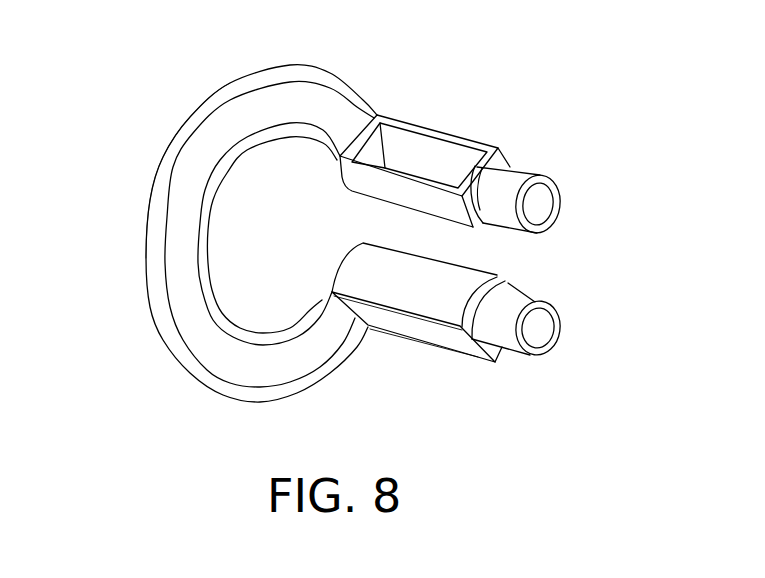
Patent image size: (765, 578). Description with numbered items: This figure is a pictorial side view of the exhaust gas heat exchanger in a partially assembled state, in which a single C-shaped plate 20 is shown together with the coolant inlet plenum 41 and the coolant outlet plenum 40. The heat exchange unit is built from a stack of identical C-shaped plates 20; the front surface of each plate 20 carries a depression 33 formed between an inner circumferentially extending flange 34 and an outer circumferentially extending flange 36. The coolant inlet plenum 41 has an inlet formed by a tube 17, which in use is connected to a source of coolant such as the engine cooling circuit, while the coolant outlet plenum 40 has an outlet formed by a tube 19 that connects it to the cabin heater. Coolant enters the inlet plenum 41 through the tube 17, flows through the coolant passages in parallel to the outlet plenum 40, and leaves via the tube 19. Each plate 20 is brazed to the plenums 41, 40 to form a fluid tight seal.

The C-shaped plate 20 is at (146, 256).
The outer circumferentially extending flange 36 is at (187, 148).
The depression 33 is at (183, 225).
The inner circumferentially extending flange 34 is at (227, 190).
The coolant inlet plenum 41 is at (455, 134).
The tube 17 is at (537, 176).
The coolant outlet plenum 40 is at (498, 276).
The tube 19 is at (558, 328).